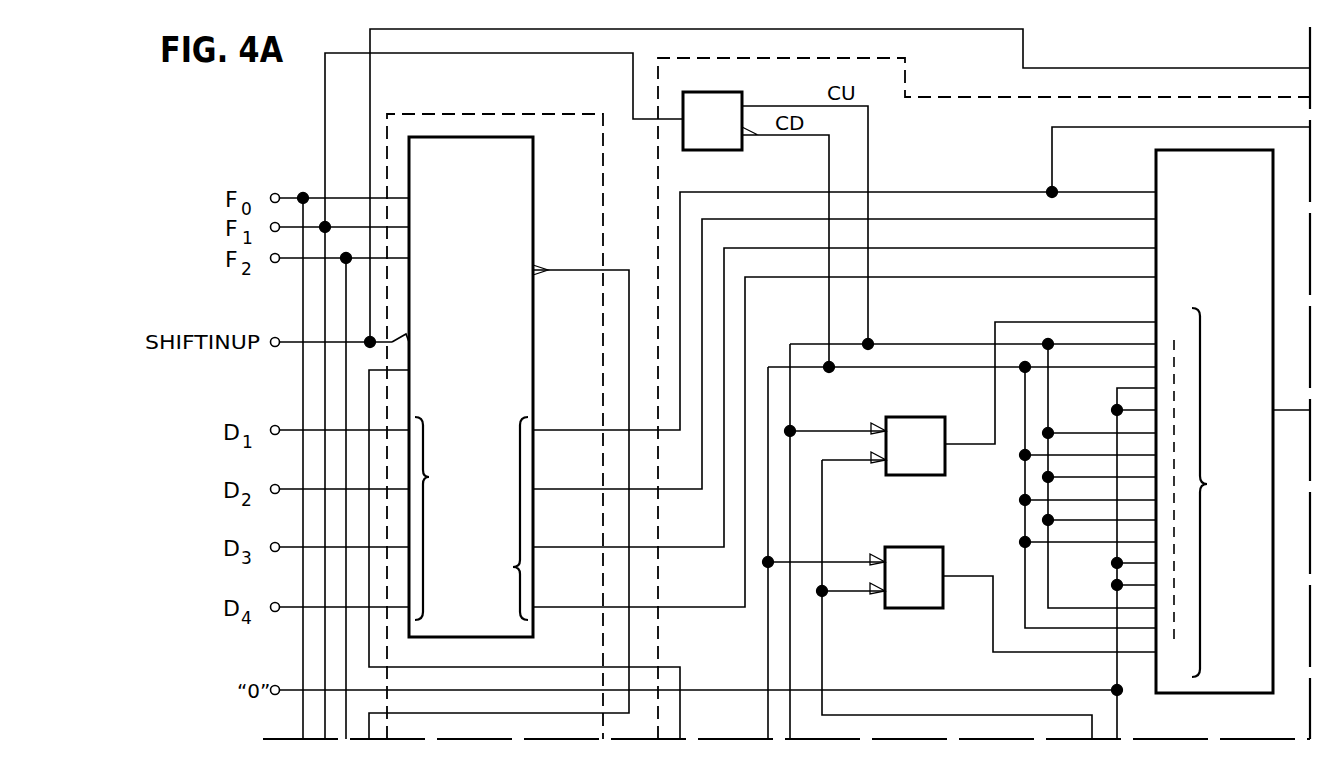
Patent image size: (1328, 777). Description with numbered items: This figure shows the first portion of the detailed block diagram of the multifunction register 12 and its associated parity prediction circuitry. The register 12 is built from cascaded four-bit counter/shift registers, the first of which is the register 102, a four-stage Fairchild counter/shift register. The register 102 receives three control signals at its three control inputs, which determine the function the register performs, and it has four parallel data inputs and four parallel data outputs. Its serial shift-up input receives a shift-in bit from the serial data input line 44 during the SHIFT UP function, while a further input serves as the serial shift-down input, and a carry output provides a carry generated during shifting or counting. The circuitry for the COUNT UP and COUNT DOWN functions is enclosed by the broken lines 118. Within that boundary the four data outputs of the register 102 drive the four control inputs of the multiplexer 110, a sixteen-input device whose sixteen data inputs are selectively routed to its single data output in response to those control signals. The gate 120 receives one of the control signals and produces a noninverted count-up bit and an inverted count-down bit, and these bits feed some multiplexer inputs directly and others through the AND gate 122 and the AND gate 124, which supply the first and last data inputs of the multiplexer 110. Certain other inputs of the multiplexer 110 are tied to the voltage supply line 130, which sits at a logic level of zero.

The multifunction register 12 is at (508, 112).
The serial data input line 44 is at (288, 336).
The 4-bit register 102 is at (534, 185).
The multiplexer 110 is at (1156, 172).
The broken lines 118 is at (1000, 97).
The OR gate 120 is at (723, 92).
The AND gate 122 is at (917, 417).
The AND gate 124 is at (920, 547).
The voltage supply line 130 is at (289, 688).